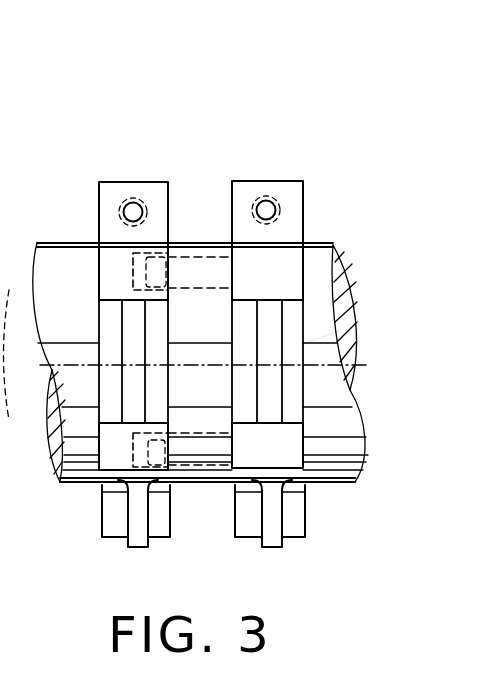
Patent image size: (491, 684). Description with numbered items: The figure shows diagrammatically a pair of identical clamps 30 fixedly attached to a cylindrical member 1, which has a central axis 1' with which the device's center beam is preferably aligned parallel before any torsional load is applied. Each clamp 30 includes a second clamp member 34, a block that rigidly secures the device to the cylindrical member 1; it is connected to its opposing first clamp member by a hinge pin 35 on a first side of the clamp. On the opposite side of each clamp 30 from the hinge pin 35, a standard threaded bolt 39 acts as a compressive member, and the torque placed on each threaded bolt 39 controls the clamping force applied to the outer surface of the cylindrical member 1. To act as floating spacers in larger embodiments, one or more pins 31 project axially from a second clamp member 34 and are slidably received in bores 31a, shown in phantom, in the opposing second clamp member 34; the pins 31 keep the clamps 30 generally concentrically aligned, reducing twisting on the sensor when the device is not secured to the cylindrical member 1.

The cylindrical member 1 is at (187, 362).
The central axis 1' is at (340, 331).
The clamp 30 is at (128, 180).
The pin 31 is at (210, 285).
The bore 31a is at (132, 266).
The second clamp member 34 is at (99, 276).
The hinge pin 35 is at (118, 522).
The threaded bolt 39 is at (126, 207).